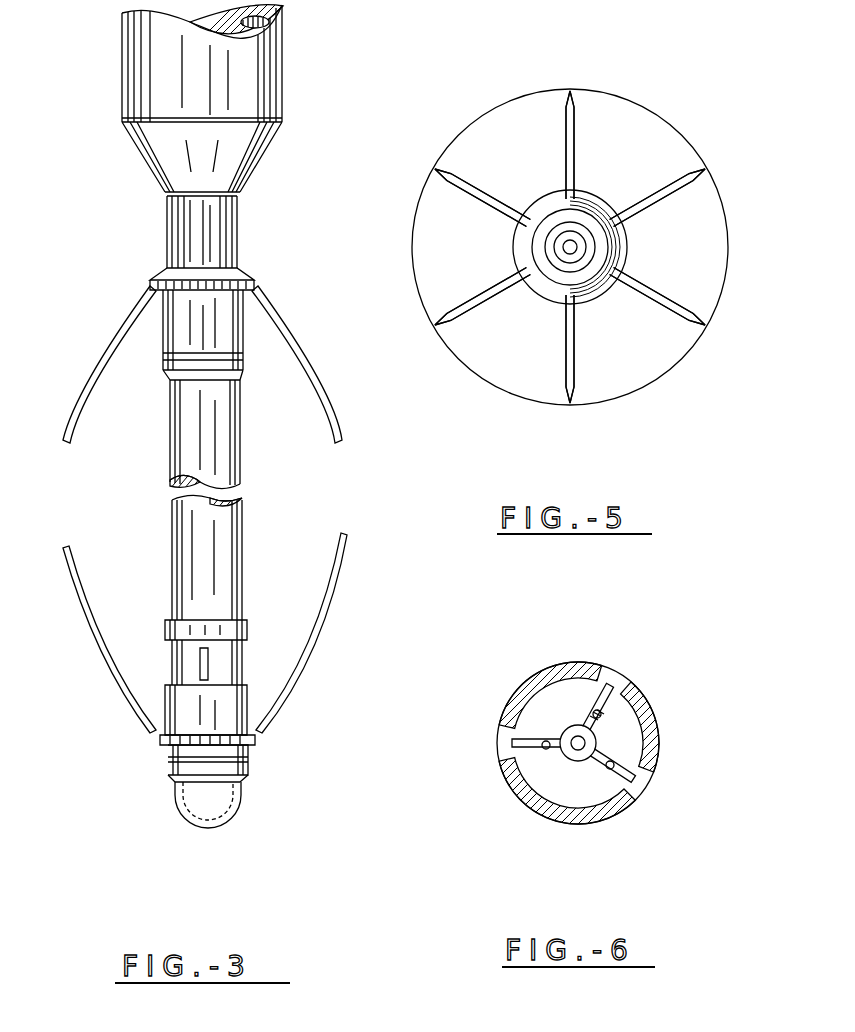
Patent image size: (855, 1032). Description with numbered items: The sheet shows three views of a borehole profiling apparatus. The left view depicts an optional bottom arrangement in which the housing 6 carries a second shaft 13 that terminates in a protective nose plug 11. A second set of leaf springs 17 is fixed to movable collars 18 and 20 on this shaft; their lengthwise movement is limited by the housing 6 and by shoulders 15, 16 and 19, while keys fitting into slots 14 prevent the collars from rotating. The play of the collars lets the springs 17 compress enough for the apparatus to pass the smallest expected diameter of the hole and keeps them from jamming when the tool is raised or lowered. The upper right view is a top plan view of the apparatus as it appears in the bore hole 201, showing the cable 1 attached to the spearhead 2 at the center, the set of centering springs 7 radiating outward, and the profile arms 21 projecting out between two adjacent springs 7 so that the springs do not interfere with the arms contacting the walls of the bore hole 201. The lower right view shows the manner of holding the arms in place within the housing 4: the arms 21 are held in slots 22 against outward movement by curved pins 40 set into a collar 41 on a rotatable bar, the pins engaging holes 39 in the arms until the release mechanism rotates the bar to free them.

In FIG. 3, the housing 6 is at (283, 70).
In FIG. 3, the second shaft 13 is at (166, 230).
In FIG. 3, the slots 14 is at (210, 222).
In FIG. 3, the movable collar 18 is at (233, 325).
In FIG. 3, the shoulder 15 is at (238, 365).
In FIG. 3, the shoulder 16 is at (248, 634).
In FIG. 3, the leaf springs 17 is at (88, 384).
In FIG. 3, the movable collar 20 is at (160, 742).
In FIG. 3, the shoulder 19 is at (250, 770).
In FIG. 3, the nose plug 11 is at (238, 798).
In FIG. 5, the bore hole 201 is at (680, 358).
In FIG. 5, the cable 1 is at (560, 247).
In FIG. 5, the spearhead 2 is at (592, 243).
In FIG. 5, the centering springs 7 is at (577, 130).
In FIG. 5, the profile arms 21 is at (472, 156).
In FIG. 6, the profile arms 21 is at (500, 737).
In FIG. 6, the housing 4 is at (524, 797).
In FIG. 6, the slots 22 is at (646, 774).
In FIG. 6, the holes 39 is at (596, 708).
In FIG. 6, the curved pins 40 is at (552, 736).
In FIG. 6, the collar 41 is at (570, 758).